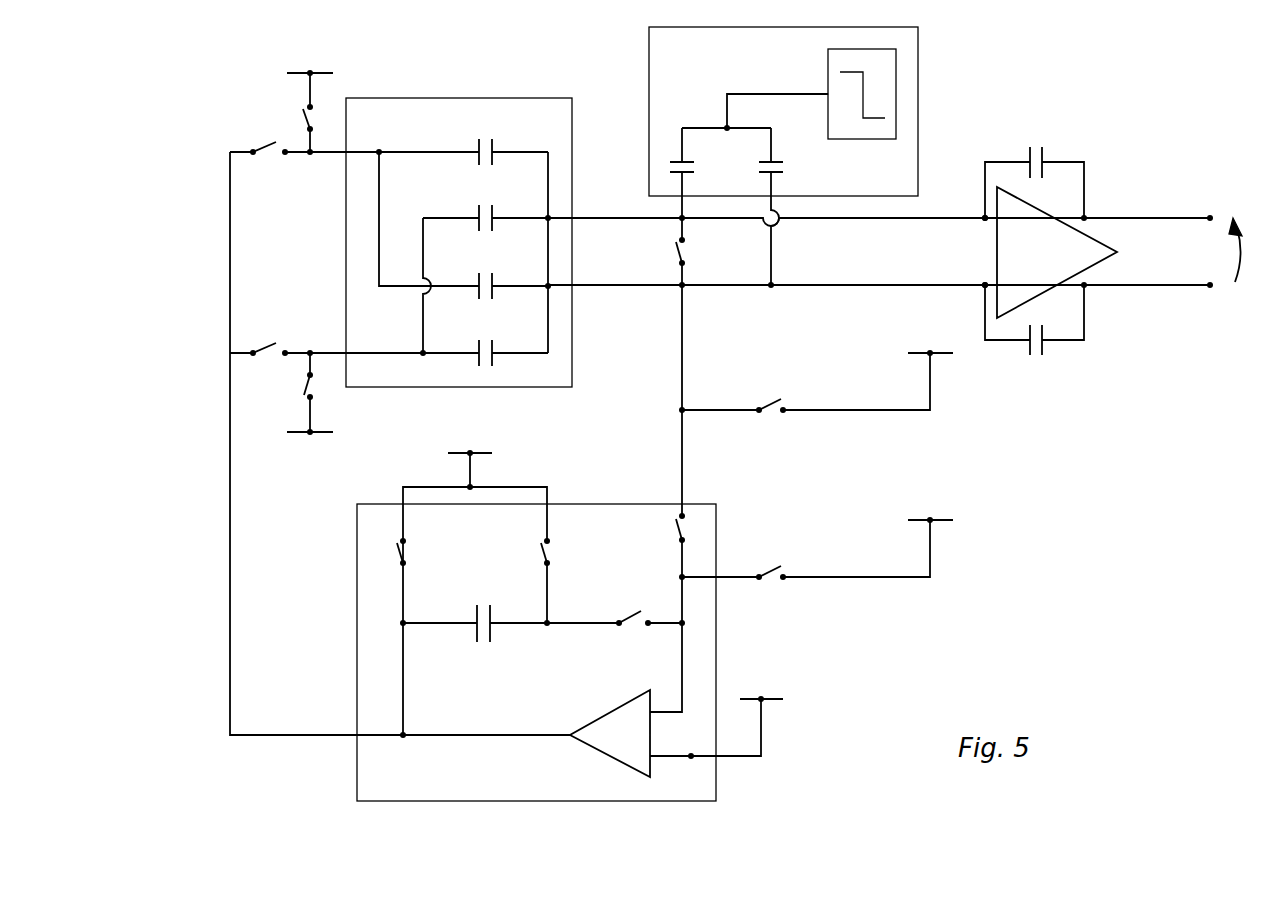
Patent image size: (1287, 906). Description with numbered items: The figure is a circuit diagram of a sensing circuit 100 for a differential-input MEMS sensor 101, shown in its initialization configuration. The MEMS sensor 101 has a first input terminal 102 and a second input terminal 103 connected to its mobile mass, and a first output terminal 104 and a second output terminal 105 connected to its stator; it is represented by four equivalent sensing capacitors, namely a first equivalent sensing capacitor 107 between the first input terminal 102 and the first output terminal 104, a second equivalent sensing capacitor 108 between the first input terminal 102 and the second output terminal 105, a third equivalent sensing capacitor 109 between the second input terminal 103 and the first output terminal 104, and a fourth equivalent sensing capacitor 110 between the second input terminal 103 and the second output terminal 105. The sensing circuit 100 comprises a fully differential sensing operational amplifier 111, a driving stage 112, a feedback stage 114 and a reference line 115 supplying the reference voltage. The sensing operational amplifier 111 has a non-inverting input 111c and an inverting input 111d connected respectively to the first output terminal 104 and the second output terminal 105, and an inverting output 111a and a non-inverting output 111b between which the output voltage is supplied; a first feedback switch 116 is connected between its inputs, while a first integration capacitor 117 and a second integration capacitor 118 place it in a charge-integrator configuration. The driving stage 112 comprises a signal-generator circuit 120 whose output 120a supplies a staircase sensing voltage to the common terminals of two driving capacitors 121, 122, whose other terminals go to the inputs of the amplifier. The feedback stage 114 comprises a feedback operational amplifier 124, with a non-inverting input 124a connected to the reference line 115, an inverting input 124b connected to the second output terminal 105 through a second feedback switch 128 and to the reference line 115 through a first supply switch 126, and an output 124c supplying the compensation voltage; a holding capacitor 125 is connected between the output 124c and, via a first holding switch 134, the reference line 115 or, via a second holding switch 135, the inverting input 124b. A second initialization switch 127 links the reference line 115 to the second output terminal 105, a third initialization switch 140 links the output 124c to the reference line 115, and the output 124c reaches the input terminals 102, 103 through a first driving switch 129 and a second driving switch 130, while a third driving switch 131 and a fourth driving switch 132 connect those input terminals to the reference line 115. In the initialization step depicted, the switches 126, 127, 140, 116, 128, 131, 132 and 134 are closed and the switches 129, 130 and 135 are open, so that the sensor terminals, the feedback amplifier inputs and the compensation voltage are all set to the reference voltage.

The sensing circuit 100 is at (961, 400).
The MEMS sensor 101 is at (460, 216).
The first input terminal 102 is at (310, 157).
The second input terminal 103 is at (309, 350).
The first output terminal 104 is at (682, 218).
The second output terminal 105 is at (682, 287).
The first equivalent sensing capacitor 107 is at (493, 146).
The second equivalent sensing capacitor 108 is at (493, 278).
The third equivalent sensing capacitor 109 is at (492, 210).
The fourth equivalent sensing capacitor 110 is at (492, 349).
The sensing operational amplifier 111 is at (1083, 232).
The inverting output 111a is at (1210, 218).
The non-inverting output 111b is at (1210, 288).
The non-inverting input 111c is at (985, 218).
The inverting input 111d is at (985, 285).
The driving stage 112 is at (823, 156).
The feedback stage 114 is at (549, 663).
The reference line 115 is at (380, 72).
The first feedback switch 116 is at (682, 248).
The first integration capacitor 117 is at (1043, 150).
The second integration capacitor 118 is at (1047, 352).
The signal-generator circuit 120 is at (888, 103).
The output 120a is at (810, 93).
The driving capacitor 121 is at (675, 162).
The driving capacitor 122 is at (778, 160).
The feedback operational amplifier 124 is at (595, 729).
The non-inverting input 124a is at (690, 758).
The inverting input 124b is at (687, 622).
The output 124c is at (403, 740).
The holding capacitor 125 is at (487, 600).
The first supply switch 126 is at (765, 575).
The second initialization switch 127 is at (773, 408).
The second feedback switch 128 is at (682, 528).
The first driving switch 129 is at (262, 147).
The second driving switch 130 is at (260, 348).
The third driving switch 131 is at (308, 119).
The fourth driving switch 132 is at (312, 385).
The first holding switch 134 is at (548, 555).
The second holding switch 135 is at (640, 612).
The third initialization switch 140 is at (403, 553).